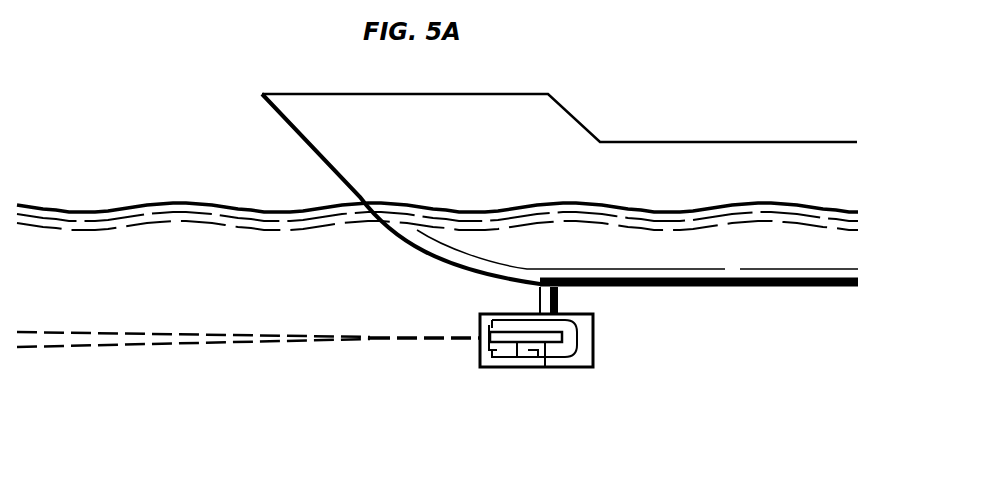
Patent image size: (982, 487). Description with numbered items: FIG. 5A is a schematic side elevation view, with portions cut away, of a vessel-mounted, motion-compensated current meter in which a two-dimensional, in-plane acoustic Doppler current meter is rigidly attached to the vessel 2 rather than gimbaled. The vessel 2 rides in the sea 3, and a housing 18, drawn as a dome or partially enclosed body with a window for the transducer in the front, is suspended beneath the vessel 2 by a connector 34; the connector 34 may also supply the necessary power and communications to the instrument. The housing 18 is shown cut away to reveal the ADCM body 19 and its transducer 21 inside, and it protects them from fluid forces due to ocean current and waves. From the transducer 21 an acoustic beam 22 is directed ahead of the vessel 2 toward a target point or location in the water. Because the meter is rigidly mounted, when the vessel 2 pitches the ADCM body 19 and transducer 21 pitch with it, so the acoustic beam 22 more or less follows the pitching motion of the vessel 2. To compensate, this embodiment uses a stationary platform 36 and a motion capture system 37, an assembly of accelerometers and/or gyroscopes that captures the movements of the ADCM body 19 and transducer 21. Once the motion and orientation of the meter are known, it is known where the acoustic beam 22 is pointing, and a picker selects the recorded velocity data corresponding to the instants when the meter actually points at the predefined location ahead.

The vessel 2 is at (770, 142).
The sea 3 is at (137, 205).
The housing 18 is at (595, 325).
The ADCM body 19 is at (498, 366).
The transducer 21 is at (481, 316).
The acoustic beam 22 is at (141, 348).
The connector 34 is at (562, 293).
The stationary platform 36 is at (552, 367).
The motion capture system 37 is at (522, 367).